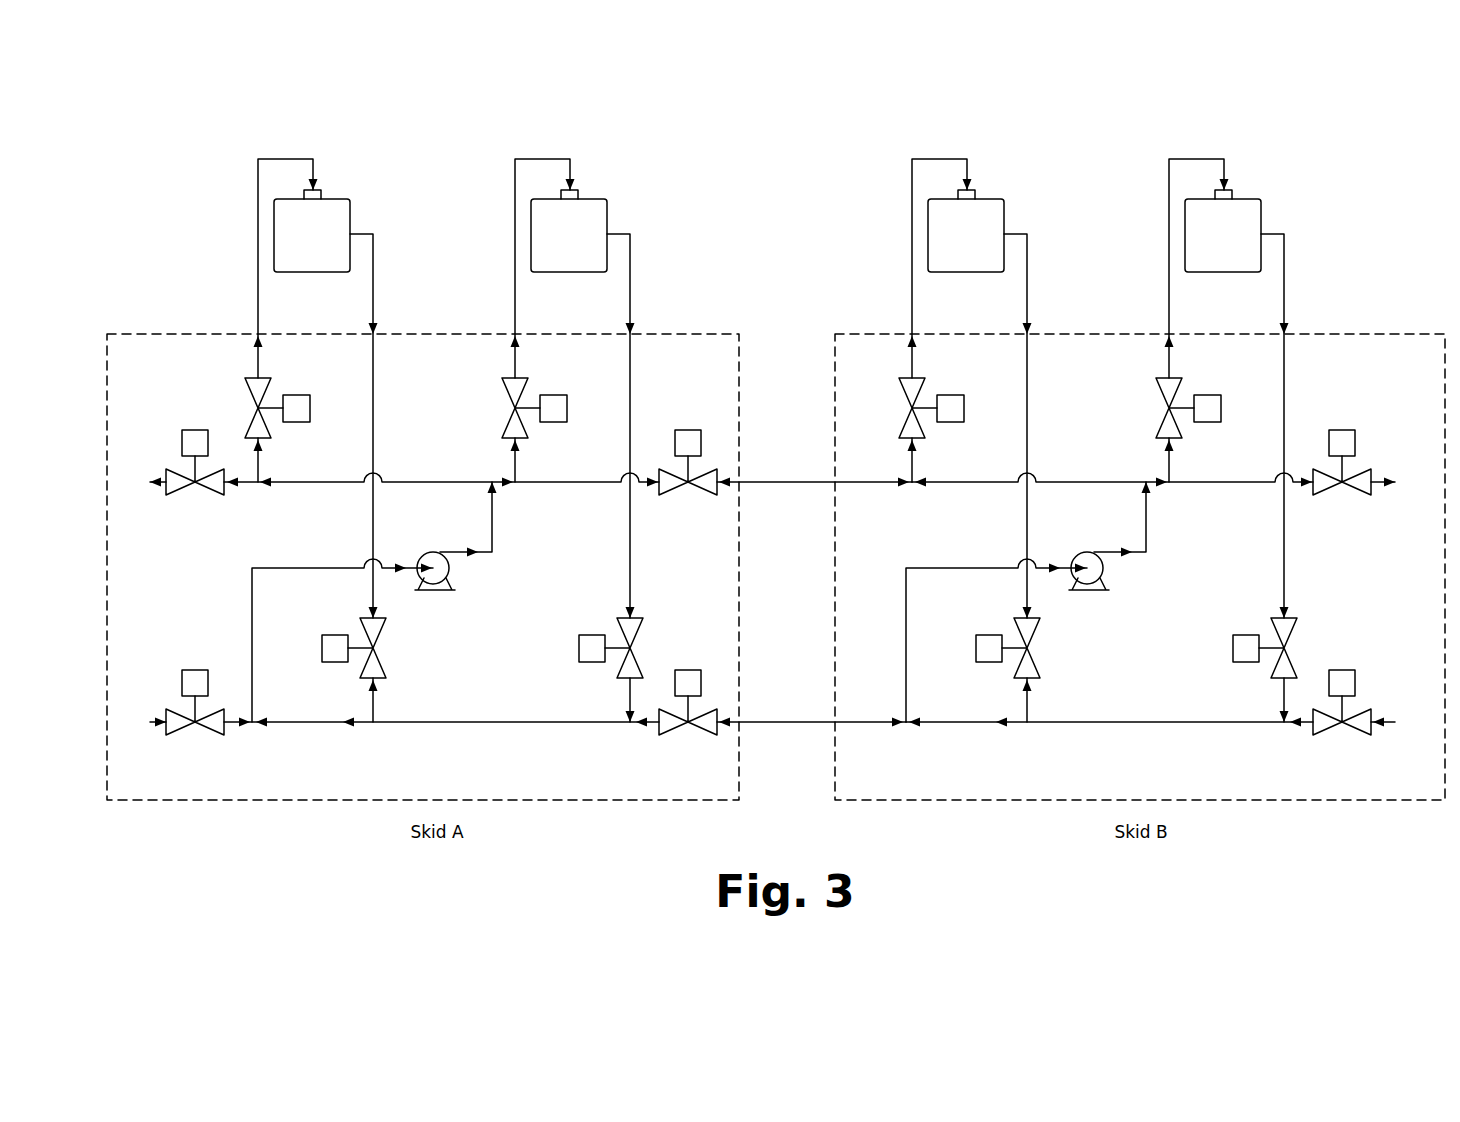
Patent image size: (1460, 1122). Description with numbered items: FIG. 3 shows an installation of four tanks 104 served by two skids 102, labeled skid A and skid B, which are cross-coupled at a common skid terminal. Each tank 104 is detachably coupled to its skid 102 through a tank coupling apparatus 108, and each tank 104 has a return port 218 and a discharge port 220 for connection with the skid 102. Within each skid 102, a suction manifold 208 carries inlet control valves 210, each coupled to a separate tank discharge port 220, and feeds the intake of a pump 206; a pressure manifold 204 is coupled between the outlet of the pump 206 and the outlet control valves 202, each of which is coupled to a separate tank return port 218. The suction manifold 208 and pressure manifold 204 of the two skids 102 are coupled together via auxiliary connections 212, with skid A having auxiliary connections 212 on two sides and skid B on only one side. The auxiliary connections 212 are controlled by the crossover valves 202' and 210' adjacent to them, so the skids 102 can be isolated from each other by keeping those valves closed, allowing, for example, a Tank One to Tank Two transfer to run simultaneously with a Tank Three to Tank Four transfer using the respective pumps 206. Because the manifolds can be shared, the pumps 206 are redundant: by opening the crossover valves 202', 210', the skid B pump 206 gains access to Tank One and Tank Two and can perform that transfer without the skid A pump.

The skid 102 is at (130, 334).
The tank 104 is at (335, 199).
The tank coupling apparatus 108 is at (258, 291).
The outlet control valve 202 is at (734, 412).
The crossover valve 202' is at (768, 451).
The pressure manifold 204 is at (768, 472).
The pump 206 is at (701, 602).
The suction manifold 208 is at (768, 733).
The inlet control valve 210 is at (789, 648).
The crossover valve 210' is at (768, 691).
The auxiliary connection 212 is at (774, 611).
The return port 218 is at (724, 320).
The discharge port 220 is at (837, 478).